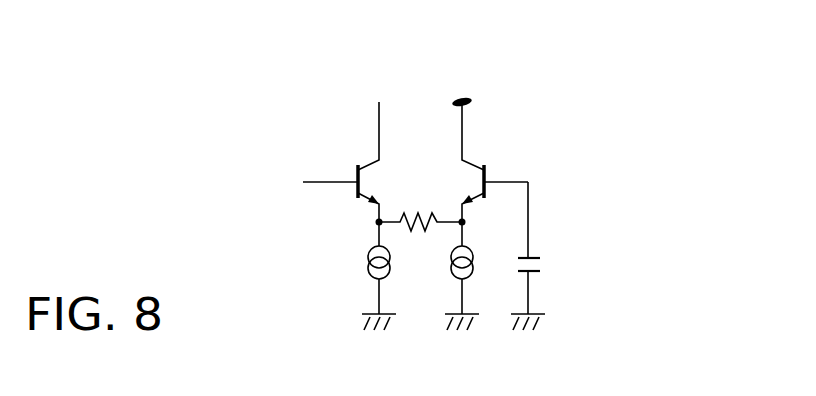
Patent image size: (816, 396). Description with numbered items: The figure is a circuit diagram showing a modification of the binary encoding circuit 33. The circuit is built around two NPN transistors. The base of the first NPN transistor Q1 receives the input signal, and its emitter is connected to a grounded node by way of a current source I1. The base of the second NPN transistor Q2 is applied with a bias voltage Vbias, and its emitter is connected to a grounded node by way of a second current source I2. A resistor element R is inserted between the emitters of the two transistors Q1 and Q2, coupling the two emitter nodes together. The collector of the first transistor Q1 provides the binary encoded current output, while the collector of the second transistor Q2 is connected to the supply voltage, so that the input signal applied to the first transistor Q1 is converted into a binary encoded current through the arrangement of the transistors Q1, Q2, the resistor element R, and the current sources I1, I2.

The binary encoding circuit 33 is at (730, 88).
The first NPN transistor Q1 is at (381, 162).
The second NPN transistor Q2 is at (479, 162).
The resistor element R is at (420, 236).
The current source I1 is at (366, 276).
The second current source I2 is at (475, 276).
The bias voltage Vbias is at (565, 256).